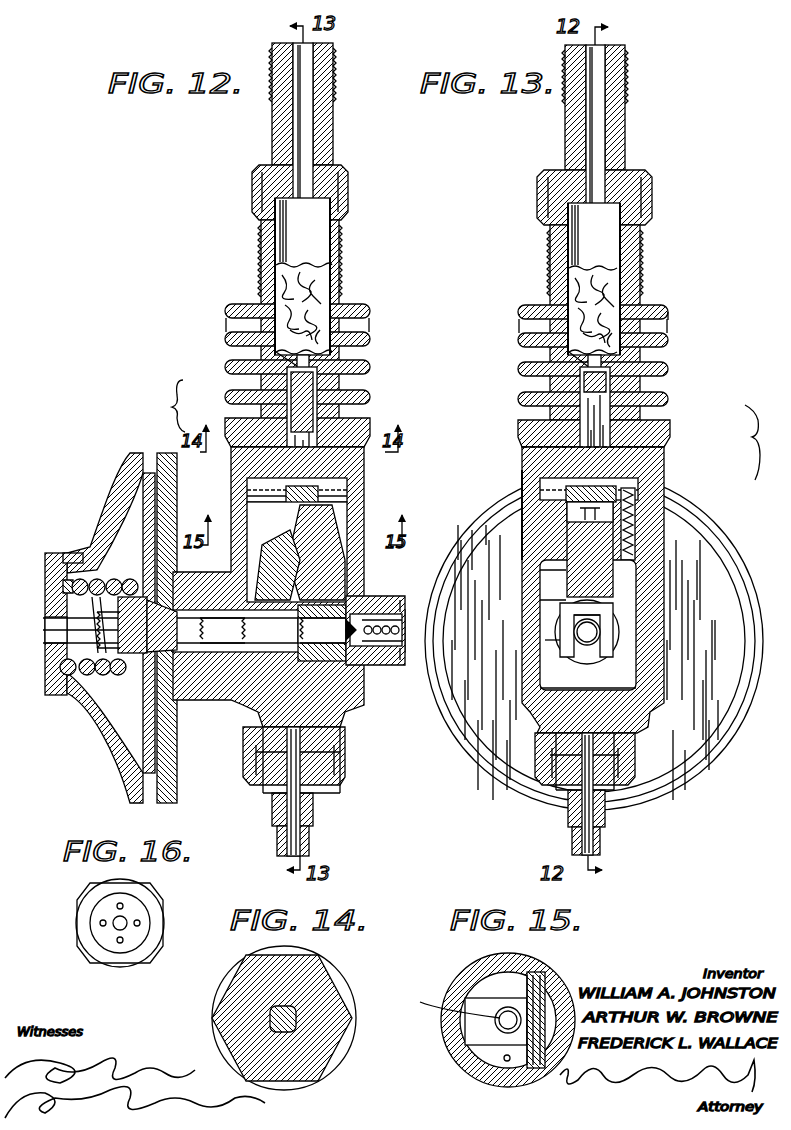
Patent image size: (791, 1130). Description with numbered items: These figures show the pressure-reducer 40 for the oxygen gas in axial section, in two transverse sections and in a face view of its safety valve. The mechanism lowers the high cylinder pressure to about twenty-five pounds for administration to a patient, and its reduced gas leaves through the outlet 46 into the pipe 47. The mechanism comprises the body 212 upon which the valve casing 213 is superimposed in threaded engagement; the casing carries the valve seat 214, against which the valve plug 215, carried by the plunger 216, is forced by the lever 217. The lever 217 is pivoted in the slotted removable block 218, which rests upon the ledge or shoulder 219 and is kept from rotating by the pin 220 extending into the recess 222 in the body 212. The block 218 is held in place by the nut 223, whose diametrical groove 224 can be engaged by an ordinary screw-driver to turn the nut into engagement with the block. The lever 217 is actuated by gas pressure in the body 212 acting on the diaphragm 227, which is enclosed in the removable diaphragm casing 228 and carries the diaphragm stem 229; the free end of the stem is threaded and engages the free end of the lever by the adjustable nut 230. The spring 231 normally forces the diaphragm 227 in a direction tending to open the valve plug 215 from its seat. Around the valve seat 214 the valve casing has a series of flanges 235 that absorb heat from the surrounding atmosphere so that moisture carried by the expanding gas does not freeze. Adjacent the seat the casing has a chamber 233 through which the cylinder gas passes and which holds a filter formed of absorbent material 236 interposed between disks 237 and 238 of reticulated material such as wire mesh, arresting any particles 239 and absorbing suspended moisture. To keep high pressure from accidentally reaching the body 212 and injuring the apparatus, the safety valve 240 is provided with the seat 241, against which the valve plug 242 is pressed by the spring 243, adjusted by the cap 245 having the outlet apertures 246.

In FIG. 12, the pressure-reducer 40 is at (164, 406).
In FIG. 13, the pressure-reducer 40 is at (733, 442).
In FIG. 12, the outlet 46 is at (333, 742).
In FIG. 13, the outlet 46 is at (585, 761).
In FIG. 12, the pipe 47 is at (312, 845).
In FIG. 13, the pipe 47 is at (595, 450).
In FIG. 15, the pipe 47 is at (460, 1010).
In FIG. 12, the body 212 is at (340, 712).
In FIG. 13, the body 212 is at (640, 542).
In FIG. 15, the body 212 is at (455, 1058).
In FIG. 12, the valve casing 213 is at (336, 378).
In FIG. 13, the valve casing 213 is at (560, 380).
In FIG. 14, the valve casing 213 is at (320, 1012).
In FIG. 12, the valve seat 214 is at (310, 360).
In FIG. 13, the valve seat 214 is at (605, 362).
In FIG. 12, the valve plug 215 is at (240, 345).
In FIG. 13, the valve plug 215 is at (535, 347).
In FIG. 12, the plunger 216 is at (318, 410).
In FIG. 13, the plunger 216 is at (582, 412).
In FIG. 14, the plunger 216 is at (270, 1012).
In FIG. 12, the lever 217 is at (345, 562).
In FIG. 15, the lever 217 is at (556, 995).
In FIG. 12, the slotted removable block 218 is at (345, 540).
In FIG. 13, the slotted removable block 218 is at (522, 515).
In FIG. 15, the slotted removable block 218 is at (480, 980).
In FIG. 13, the ledge or shoulder 219 is at (568, 548).
In FIG. 13, the pin 220 is at (635, 505).
In FIG. 15, the pin 220 is at (505, 1062).
In FIG. 13, the recess 222 is at (636, 565).
In FIG. 12, the nut 223 is at (290, 490).
In FIG. 13, the nut 223 is at (640, 488).
In FIG. 12, the diametrical groove 224 is at (330, 497).
In FIG. 13, the diametrical groove 224 is at (540, 494).
In FIG. 12, the diaphragm 227 is at (143, 505).
In FIG. 13, the diaphragm 227 is at (585, 662).
In FIG. 12, the diaphragm casing 228 is at (165, 772).
In FIG. 13, the diaphragm casing 228 is at (672, 770).
In FIG. 12, the diaphragm stem 229 is at (217, 703).
In FIG. 13, the diaphragm stem 229 is at (545, 640).
In FIG. 12, the adjustable nut 230 is at (350, 622).
In FIG. 13, the adjustable nut 230 is at (620, 640).
In FIG. 12, the spring 231 is at (80, 578).
In FIG. 13, the chamber 233 is at (668, 312).
In FIG. 12, the flanges 235 is at (365, 333).
In FIG. 13, the flanges 235 is at (524, 333).
In FIG. 12, the absorbent material 236 is at (312, 290).
In FIG. 13, the absorbent material 236 is at (605, 300).
In FIG. 12, the disk of reticulated material 237 is at (288, 325).
In FIG. 13, the disk of reticulated material 237 is at (620, 332).
In FIG. 12, the disk of reticulated material 238 is at (275, 258).
In FIG. 13, the disk of reticulated material 238 is at (568, 283).
In FIG. 12, the particles 239 is at (335, 245).
In FIG. 13, the particles 239 is at (625, 258).
In FIG. 12, the safety valve 240 is at (390, 665).
In FIG. 16, the safety valve 240 is at (78, 915).
In FIG. 12, the seat 241 is at (321, 638).
In FIG. 12, the valve plug 242 is at (402, 628).
In FIG. 13, the valve plug 242 is at (540, 612).
In FIG. 12, the spring 243 is at (395, 612).
In FIG. 13, the spring 243 is at (500, 580).
In FIG. 12, the cap 245 is at (395, 683).
In FIG. 16, the cap 245 is at (135, 938).
In FIG. 12, the outlet apertures 246 is at (400, 665).
In FIG. 13, the outlet apertures 246 is at (505, 794).
In FIG. 16, the outlet apertures 246 is at (100, 928).